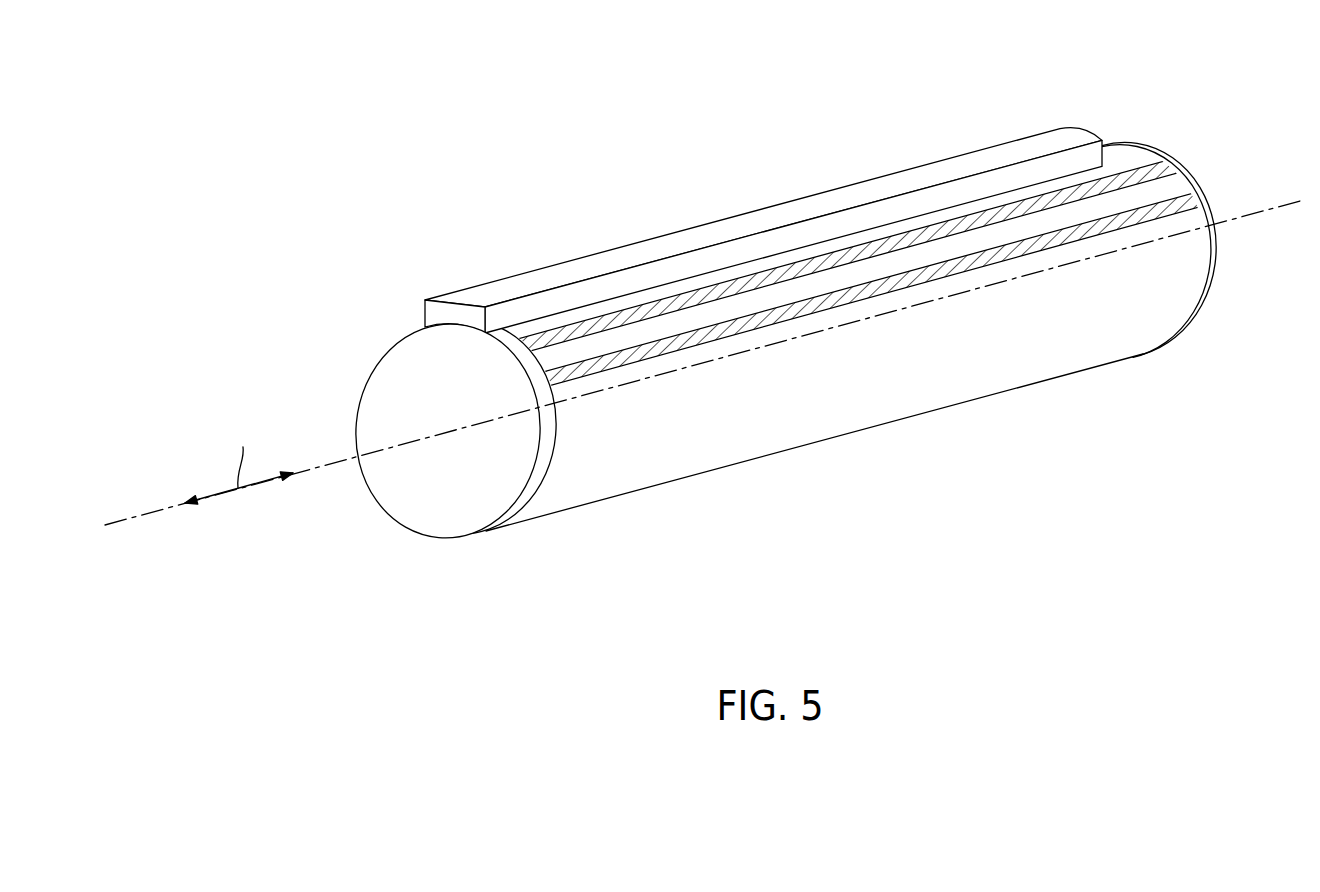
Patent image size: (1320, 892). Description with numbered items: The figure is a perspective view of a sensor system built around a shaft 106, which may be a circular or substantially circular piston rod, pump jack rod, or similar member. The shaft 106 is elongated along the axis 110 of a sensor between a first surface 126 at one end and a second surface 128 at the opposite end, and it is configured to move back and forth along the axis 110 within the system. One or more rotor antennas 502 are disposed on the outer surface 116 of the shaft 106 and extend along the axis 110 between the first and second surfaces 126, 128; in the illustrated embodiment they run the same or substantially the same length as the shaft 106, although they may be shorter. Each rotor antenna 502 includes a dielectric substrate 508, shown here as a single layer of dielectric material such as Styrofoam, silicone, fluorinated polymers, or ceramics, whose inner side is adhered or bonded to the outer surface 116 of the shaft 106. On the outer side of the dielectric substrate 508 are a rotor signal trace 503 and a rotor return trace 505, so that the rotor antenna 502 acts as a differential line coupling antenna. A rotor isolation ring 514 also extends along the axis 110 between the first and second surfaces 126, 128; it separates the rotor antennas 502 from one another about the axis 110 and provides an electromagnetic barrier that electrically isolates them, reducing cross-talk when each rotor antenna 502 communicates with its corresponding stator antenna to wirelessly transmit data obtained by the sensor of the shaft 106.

The shaft 106 is at (702, 316).
The axis 110 is at (1270, 210).
The outer surface 116 is at (517, 515).
The first surface 126 is at (435, 512).
The second surface 128 is at (1217, 260).
The rotor antenna 502 is at (854, 225).
The rotor signal trace 503 is at (1058, 242).
The rotor return trace 505 is at (963, 222).
The dielectric substrate 508 is at (668, 465).
The rotor isolation ring 514 is at (585, 265).